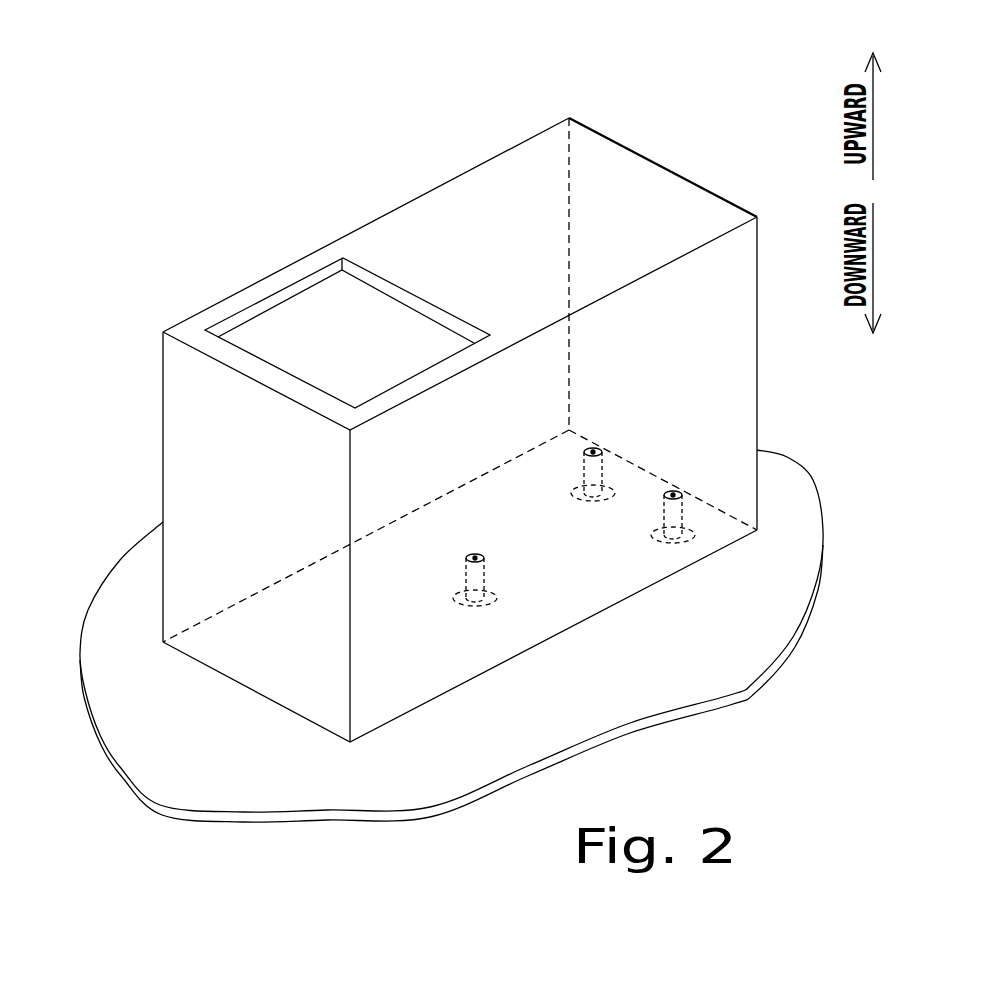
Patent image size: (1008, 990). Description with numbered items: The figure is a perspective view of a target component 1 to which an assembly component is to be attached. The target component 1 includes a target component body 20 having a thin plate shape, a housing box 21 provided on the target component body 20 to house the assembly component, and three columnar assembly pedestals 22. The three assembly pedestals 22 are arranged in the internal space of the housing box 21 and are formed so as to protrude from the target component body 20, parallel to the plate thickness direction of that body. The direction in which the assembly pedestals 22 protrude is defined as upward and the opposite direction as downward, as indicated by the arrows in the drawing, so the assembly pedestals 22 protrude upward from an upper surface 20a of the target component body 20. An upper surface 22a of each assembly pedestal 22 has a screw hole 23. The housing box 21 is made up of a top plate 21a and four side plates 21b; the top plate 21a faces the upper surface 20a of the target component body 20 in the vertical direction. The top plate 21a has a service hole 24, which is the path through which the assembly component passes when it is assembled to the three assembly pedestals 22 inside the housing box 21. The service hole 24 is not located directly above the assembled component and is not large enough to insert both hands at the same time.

The target component 1 is at (127, 595).
The target component body 20 is at (451, 683).
The upper surface 20a is at (197, 788).
The housing box 21 is at (405, 205).
The top plate 21a is at (607, 160).
The side plates 21b is at (518, 165).
The assembly pedestals 22 is at (584, 472).
The upper surface 22a is at (598, 451).
The screw hole 23 is at (594, 450).
The service hole 24 is at (353, 272).